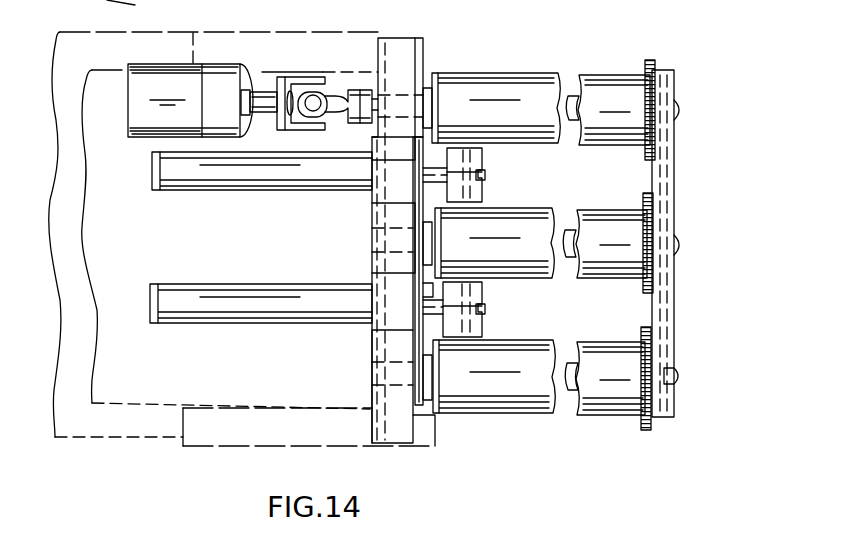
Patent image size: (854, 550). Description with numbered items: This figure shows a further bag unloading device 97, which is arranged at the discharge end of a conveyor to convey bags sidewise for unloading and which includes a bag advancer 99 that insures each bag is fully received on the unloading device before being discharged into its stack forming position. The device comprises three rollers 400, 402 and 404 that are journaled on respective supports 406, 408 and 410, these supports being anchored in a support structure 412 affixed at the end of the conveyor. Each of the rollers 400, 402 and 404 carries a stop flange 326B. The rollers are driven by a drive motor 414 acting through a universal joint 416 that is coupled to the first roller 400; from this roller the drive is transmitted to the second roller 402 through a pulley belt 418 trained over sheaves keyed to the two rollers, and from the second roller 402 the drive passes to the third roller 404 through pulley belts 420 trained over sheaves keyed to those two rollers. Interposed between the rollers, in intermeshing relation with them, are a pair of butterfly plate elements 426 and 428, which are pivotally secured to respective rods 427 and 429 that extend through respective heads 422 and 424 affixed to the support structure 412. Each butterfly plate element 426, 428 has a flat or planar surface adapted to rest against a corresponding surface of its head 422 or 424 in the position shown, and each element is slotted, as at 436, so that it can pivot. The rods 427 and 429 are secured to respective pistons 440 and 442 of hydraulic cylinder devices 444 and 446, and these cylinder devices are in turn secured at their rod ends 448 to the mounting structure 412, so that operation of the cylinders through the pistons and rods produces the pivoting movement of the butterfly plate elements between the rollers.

The bag unloading device 97 is at (401, 223).
The bag advancer 99 is at (493, 140).
The stop flange 326B is at (655, 60).
The roller 400 is at (612, 90).
The roller 402 is at (620, 210).
The roller 404 is at (613, 357).
The support 406 is at (568, 98).
The support 408 is at (568, 230).
The support 410 is at (566, 363).
The support structure 412 is at (415, 60).
The drive motor 414 is at (128, 147).
The universal joint 416 is at (315, 77).
The pulley belt 418 is at (674, 180).
The pulley belts 420 is at (410, 287).
The head 422 is at (444, 143).
The head 424 is at (440, 345).
The butterfly plate element 426 is at (485, 160).
The rod 427 is at (485, 176).
The butterfly plate element 428 is at (484, 300).
The rod 429 is at (485, 311).
The slot 436 is at (500, 208).
The piston 440 is at (364, 204).
The piston 442 is at (370, 340).
The hydraulic cylinder device 444 is at (232, 178).
The hydraulic cylinder device 446 is at (240, 312).
The rod end 448 is at (388, 177).